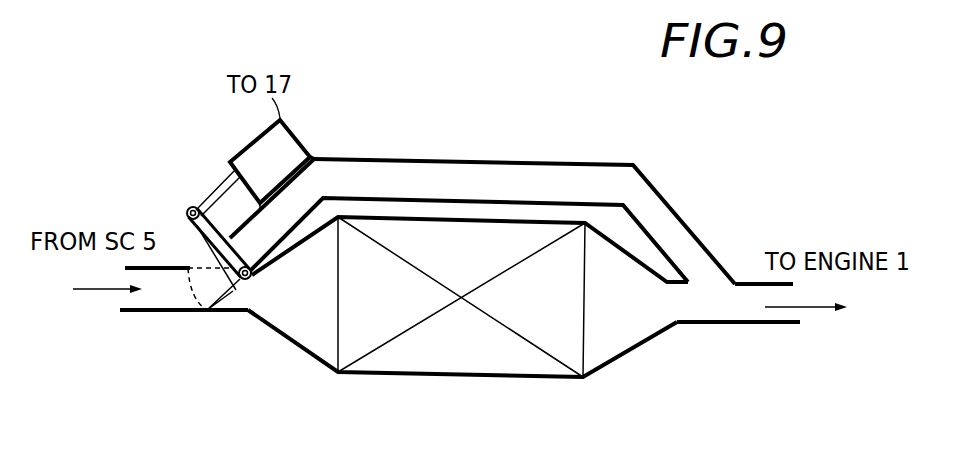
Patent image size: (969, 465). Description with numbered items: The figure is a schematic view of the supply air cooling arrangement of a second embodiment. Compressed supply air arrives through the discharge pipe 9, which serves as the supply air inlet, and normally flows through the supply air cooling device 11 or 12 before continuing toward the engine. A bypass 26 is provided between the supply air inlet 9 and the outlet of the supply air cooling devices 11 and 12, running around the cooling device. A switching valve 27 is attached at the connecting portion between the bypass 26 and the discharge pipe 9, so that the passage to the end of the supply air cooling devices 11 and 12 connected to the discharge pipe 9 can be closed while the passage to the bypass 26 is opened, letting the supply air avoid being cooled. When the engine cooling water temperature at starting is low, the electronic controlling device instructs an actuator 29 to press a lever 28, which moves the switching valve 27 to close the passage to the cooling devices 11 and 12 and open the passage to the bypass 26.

The discharge pipe 9 is at (143, 313).
The supply air cooling device 11 is at (400, 372).
The supply air cooling device 12 is at (468, 330).
The bypass 26 is at (593, 165).
The switching valve 27 is at (220, 318).
The lever 28 is at (185, 230).
The actuator 29 is at (295, 146).